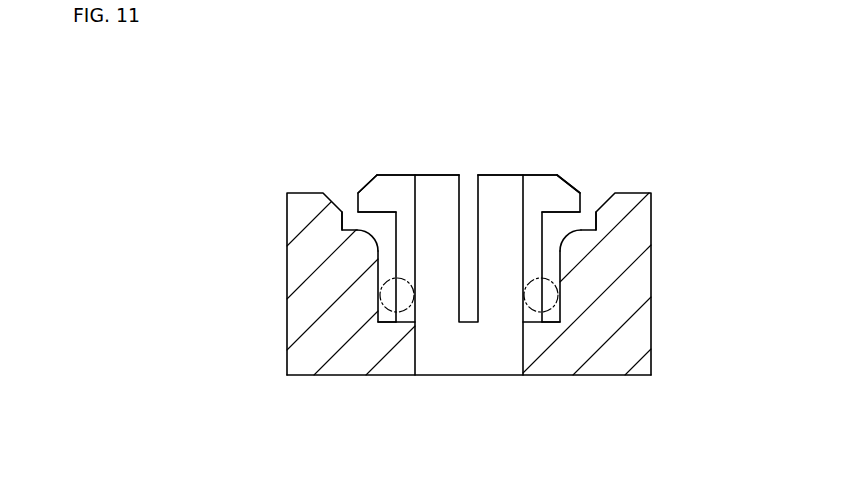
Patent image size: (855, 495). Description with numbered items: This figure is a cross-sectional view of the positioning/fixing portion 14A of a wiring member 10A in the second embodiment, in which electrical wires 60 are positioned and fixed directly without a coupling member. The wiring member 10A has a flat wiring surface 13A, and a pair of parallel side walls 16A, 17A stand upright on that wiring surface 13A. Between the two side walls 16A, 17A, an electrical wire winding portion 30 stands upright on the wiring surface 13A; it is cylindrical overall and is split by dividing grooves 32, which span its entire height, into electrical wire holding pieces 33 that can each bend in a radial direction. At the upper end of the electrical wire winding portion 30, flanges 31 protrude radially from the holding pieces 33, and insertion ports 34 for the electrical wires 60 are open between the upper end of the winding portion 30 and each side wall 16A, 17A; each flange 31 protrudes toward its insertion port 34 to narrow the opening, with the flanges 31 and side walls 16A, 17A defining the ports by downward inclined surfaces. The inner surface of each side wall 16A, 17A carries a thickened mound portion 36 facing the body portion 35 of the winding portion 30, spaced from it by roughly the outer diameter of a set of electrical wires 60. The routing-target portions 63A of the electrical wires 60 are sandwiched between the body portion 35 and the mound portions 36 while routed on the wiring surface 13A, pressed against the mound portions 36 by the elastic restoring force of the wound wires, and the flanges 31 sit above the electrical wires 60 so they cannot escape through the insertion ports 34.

The positioning/fixing portion 14A is at (467, 74).
The wiring member 10A is at (295, 193).
The side wall 16A is at (287, 193).
The side wall 17A is at (650, 193).
The wiring surface 13A is at (412, 311).
The electrical wire winding portion 30 is at (438, 175).
The flange 31 is at (563, 200).
The dividing groove 32 is at (470, 208).
The electrical wire holding piece 33 is at (408, 186).
The insertion port 34 is at (345, 216).
The body portion 35 is at (415, 252).
The mound portion 36 is at (365, 243).
The electrical wire 60 is at (390, 312).
The routing-target portion 63A is at (387, 293).